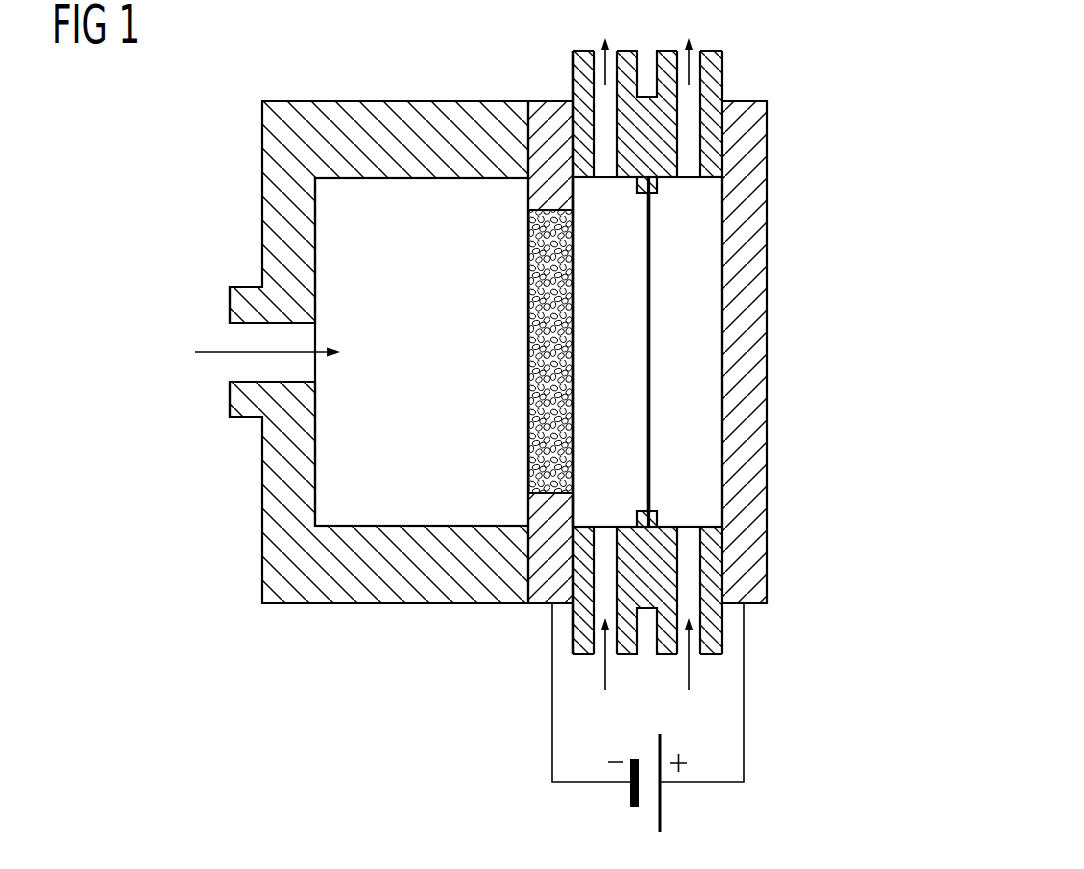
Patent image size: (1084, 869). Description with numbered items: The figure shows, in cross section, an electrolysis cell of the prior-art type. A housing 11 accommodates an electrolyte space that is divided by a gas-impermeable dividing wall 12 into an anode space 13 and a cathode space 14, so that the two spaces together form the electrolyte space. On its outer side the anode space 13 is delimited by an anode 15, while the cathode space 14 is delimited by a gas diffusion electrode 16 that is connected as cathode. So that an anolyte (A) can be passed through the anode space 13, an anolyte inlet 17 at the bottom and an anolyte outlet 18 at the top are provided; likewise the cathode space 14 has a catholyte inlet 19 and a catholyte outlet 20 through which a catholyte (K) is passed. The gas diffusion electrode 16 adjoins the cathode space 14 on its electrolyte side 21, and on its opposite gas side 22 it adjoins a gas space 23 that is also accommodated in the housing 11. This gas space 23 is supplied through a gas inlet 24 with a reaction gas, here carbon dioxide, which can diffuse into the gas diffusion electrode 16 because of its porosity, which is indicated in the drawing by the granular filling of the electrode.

The housing 11 is at (866, 95).
The gas-impermeable dividing wall 12 is at (650, 313).
The anode space 13 is at (698, 366).
The cathode space 14 is at (620, 425).
The anode 15 is at (755, 475).
The gas diffusion electrode 16 is at (540, 364).
The anolyte inlet 17 is at (710, 630).
The anolyte outlet 18 is at (716, 72).
The catholyte inlet 19 is at (582, 633).
The catholyte outlet 20 is at (580, 76).
The electrolyte side 21 is at (582, 281).
The gas side 22 is at (522, 304).
The gas space 23 is at (377, 497).
The gas inlet 24 is at (250, 405).